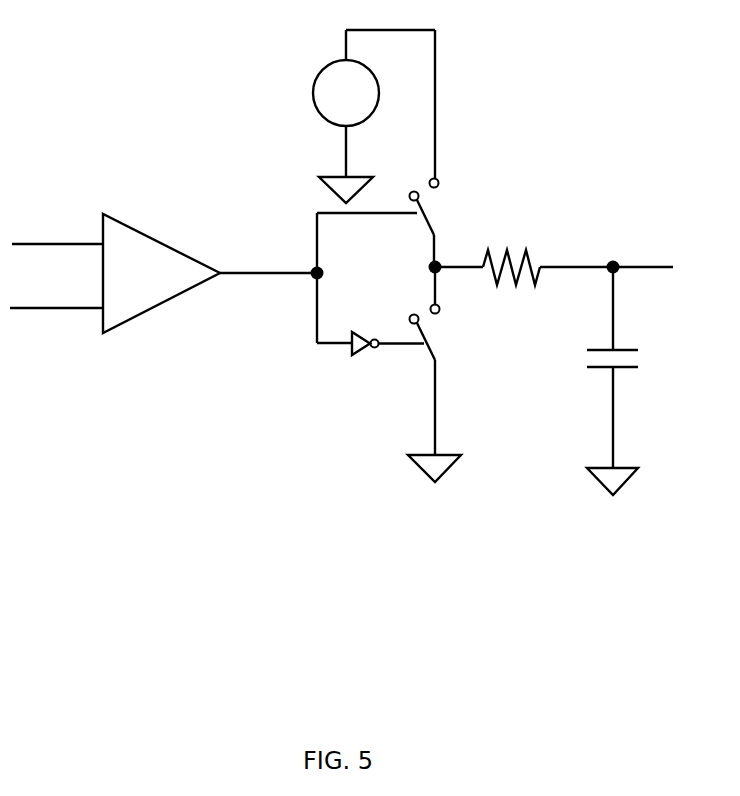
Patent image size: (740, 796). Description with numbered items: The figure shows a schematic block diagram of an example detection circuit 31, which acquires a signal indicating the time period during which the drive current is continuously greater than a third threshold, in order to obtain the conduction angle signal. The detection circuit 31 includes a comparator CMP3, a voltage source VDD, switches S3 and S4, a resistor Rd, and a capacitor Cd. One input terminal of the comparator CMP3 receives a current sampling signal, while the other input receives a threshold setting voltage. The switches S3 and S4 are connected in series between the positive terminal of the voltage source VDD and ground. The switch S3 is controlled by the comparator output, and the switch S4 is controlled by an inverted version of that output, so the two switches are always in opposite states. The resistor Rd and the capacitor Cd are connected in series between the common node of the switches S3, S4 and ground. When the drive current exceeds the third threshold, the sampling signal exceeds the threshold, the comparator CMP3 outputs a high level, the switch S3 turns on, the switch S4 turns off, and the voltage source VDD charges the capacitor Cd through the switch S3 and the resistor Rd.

The detection circuit 31 is at (345, 262).
The comparator CMP3 is at (163, 273).
The voltage source VDD is at (337, 116).
The switch S3 is at (444, 223).
The switch S4 is at (442, 374).
The resistor Rd is at (524, 286).
The capacitor Cd is at (634, 381).